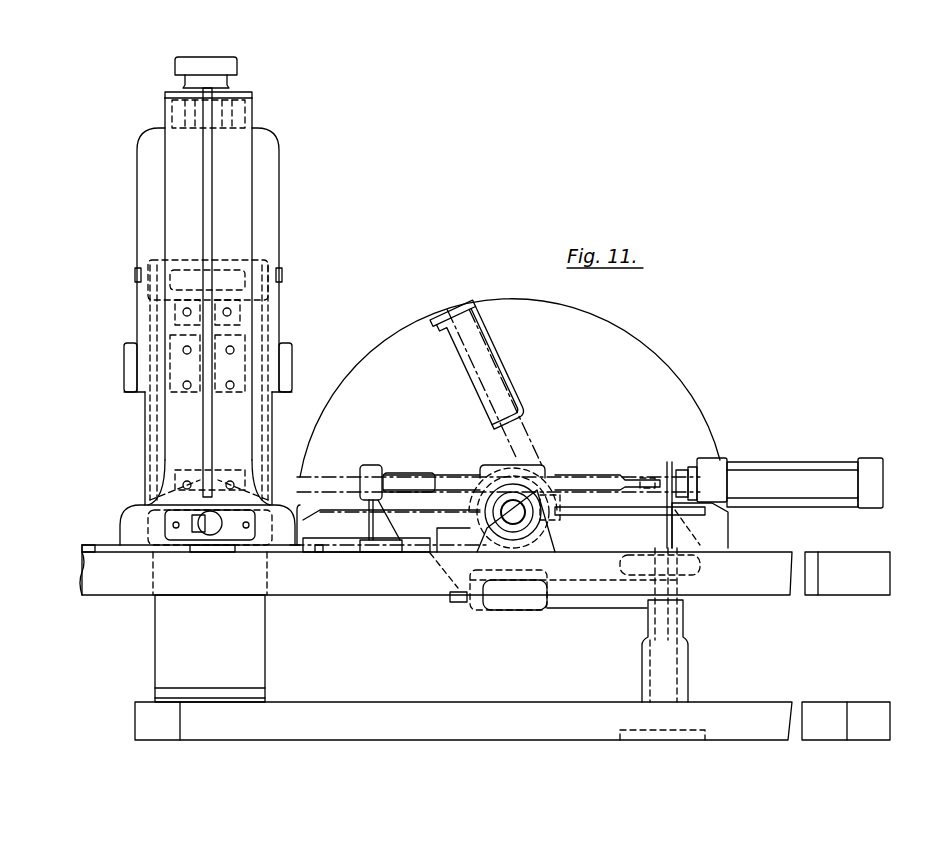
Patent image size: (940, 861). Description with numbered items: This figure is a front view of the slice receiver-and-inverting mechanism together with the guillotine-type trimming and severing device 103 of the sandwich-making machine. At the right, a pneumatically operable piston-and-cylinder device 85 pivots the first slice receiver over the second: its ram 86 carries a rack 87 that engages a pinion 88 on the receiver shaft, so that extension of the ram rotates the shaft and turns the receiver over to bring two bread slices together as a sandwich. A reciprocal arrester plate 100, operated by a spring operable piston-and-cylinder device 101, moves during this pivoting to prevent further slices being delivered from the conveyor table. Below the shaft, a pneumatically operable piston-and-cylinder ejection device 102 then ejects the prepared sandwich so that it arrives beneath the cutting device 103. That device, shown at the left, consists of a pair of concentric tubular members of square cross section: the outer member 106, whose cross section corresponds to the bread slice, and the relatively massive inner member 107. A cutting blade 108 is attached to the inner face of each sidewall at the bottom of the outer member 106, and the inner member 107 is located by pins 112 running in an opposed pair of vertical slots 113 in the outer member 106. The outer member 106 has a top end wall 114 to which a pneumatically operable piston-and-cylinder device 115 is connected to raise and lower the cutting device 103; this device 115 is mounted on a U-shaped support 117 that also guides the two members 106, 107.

The pneumatically operable piston-and-cylinder device 85 is at (766, 485).
The ram 86 is at (665, 476).
The rack 87 is at (610, 477).
The pinion 88 is at (538, 482).
The reciprocal arrester plate 100 is at (700, 575).
The spring operable piston-and-cylinder device 101 is at (684, 638).
The pneumatically operable piston-and-cylinder ejection device 102 is at (447, 533).
The trimming and severing device 103 is at (300, 326).
The outer tubular member 106 is at (137, 229).
The inner tubular member 107 is at (152, 439).
The cutting blade 108 is at (258, 478).
The pins 112 is at (162, 273).
The vertical slots 113 is at (147, 311).
The top end wall 114 is at (266, 133).
The pneumatically operable piston-and-cylinder device 115 is at (237, 68).
The U-shaped support 117 is at (246, 168).